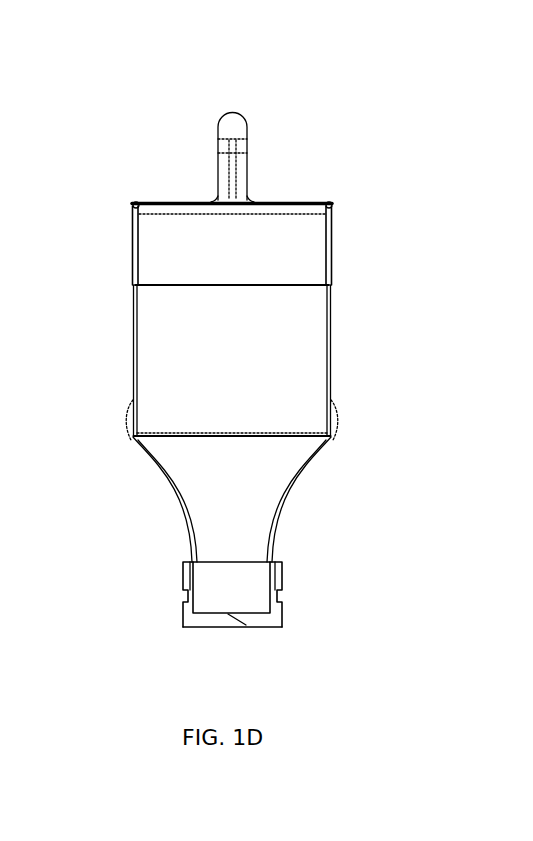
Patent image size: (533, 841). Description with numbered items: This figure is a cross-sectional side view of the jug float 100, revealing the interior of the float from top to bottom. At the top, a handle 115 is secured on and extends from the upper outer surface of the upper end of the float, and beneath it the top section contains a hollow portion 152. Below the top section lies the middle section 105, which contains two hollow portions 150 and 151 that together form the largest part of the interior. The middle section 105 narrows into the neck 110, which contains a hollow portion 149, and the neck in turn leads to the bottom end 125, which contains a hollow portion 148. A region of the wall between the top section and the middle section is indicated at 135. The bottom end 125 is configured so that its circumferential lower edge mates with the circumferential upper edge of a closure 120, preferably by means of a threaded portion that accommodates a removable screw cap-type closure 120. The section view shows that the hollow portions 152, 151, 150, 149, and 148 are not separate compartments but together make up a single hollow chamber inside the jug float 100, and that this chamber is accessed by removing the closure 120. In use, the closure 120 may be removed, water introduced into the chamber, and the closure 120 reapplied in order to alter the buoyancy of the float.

The jug float 100 is at (329, 123).
The middle section 105 is at (130, 387).
The neck 110 is at (183, 512).
The handle 115 is at (238, 119).
The closure 120 is at (222, 617).
The bottom end 125 is at (185, 565).
The collar sidewall 135 is at (327, 250).
The hollow portion 148 is at (255, 583).
The hollow portion 149 is at (255, 497).
The hollow portion 150 is at (235, 370).
The hollow portion 151 is at (272, 268).
The hollow portion 152 is at (303, 199).